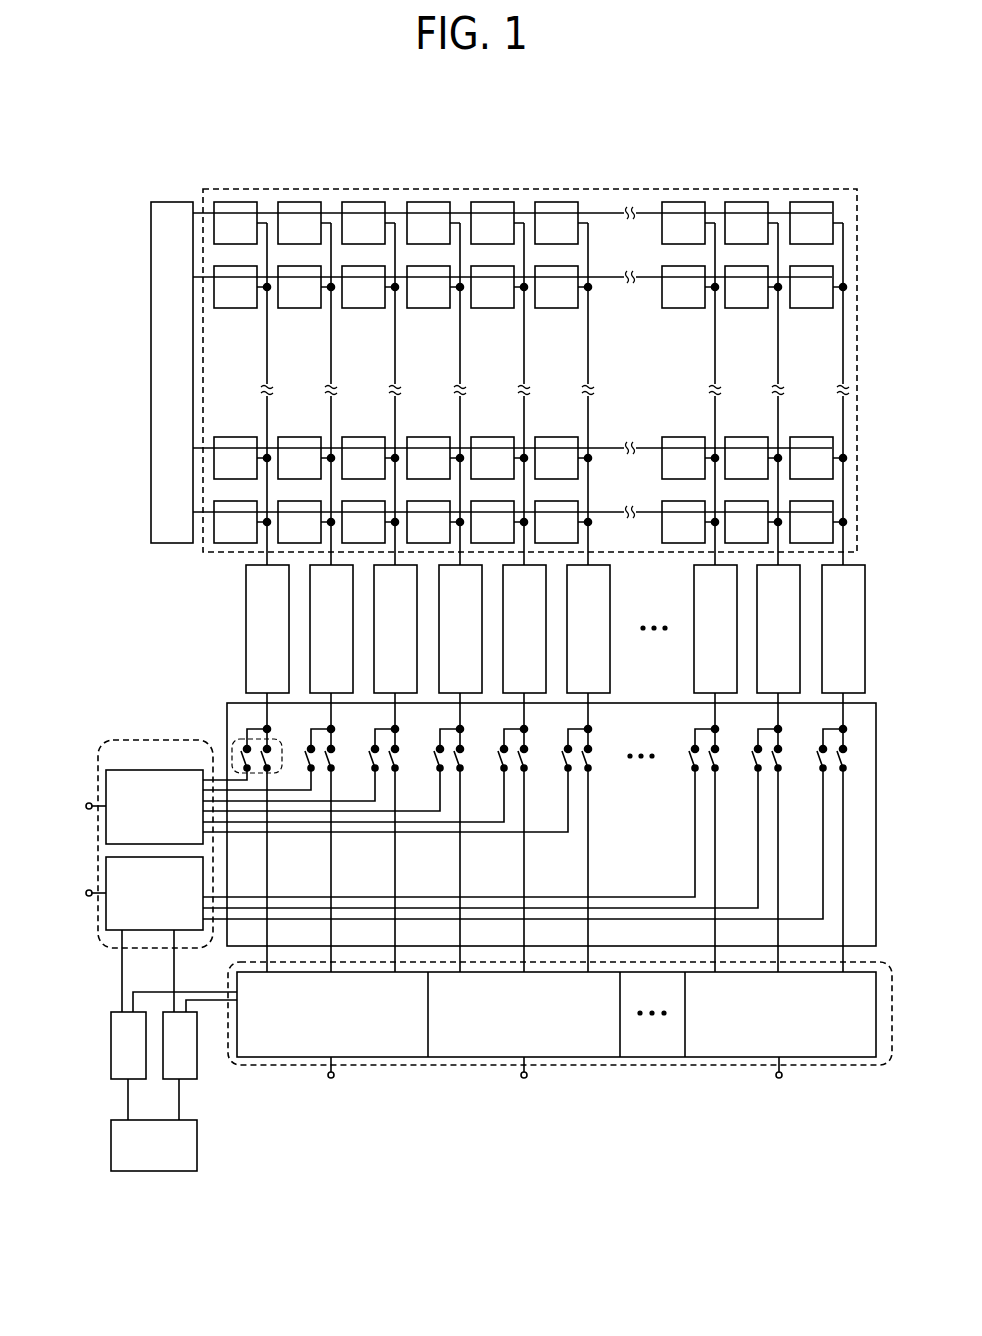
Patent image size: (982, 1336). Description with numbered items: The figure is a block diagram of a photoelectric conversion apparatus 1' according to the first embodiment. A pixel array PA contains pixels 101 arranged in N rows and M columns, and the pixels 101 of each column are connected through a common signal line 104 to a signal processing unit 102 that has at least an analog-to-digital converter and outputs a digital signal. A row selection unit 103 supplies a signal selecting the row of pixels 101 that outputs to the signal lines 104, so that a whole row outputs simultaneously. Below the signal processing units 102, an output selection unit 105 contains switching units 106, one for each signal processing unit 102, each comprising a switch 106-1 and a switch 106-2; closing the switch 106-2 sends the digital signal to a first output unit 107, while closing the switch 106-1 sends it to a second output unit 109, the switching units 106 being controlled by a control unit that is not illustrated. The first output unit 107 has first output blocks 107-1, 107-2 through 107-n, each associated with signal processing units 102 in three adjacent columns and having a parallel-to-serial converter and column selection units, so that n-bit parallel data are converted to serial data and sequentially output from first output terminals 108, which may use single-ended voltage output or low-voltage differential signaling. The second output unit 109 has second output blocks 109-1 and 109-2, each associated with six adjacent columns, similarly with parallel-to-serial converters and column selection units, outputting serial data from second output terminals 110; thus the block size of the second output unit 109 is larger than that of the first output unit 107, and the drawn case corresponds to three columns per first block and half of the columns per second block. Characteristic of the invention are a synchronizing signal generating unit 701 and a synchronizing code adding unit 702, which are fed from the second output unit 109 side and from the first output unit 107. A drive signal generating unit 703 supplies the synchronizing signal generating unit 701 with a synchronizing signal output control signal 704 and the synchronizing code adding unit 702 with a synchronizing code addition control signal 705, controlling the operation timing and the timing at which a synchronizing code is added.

The imaging apparatus 1' is at (529, 98).
The pixel array PA is at (817, 188).
The pixel 101 is at (235, 200).
The signal processing unit 102 is at (246, 605).
The row selection unit 103 is at (173, 200).
The signal line 104 is at (268, 363).
The output selection unit 105 is at (227, 703).
The switching unit 106 is at (238, 827).
The switch 106-1 is at (232, 752).
The switch 106-2 is at (268, 745).
The first output unit 107 is at (539, 1033).
The first output block 107-1 is at (410, 1066).
The first output block 107-2 is at (585, 1066).
The first output block 107-n is at (842, 1066).
The first output terminal 108 is at (331, 1080).
The second output unit 109 is at (120, 819).
The second output block 109-1 is at (106, 770).
The second output block 109-2 is at (106, 857).
The second output terminal 110 is at (86, 806).
The synchronizing signal generating unit 701 is at (113, 1008).
The synchronizing code adding unit 702 is at (197, 1068).
The drive signal generating unit 703 is at (111, 1145).
The synchronizing signal output control signal 704 is at (126, 1110).
The synchronizing code addition control signal 705 is at (181, 1100).